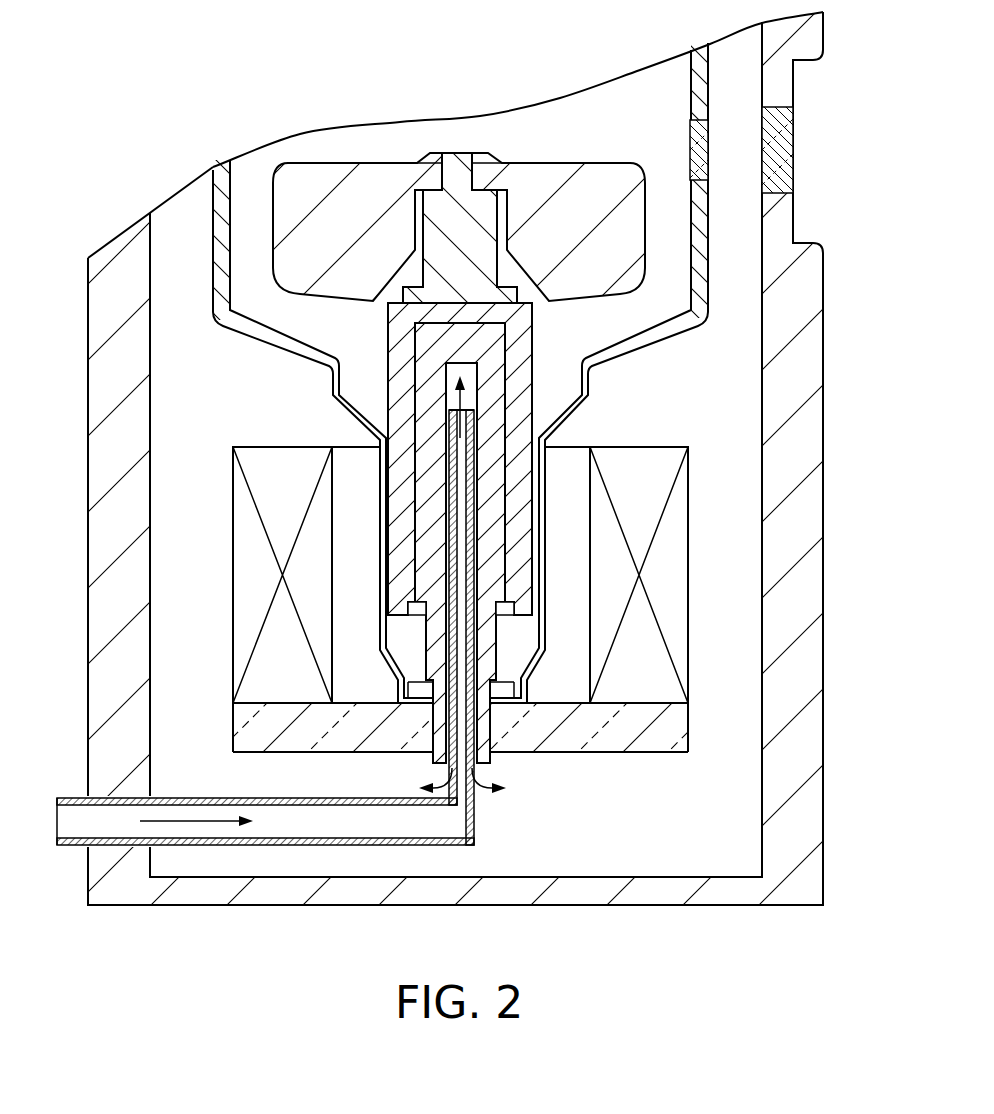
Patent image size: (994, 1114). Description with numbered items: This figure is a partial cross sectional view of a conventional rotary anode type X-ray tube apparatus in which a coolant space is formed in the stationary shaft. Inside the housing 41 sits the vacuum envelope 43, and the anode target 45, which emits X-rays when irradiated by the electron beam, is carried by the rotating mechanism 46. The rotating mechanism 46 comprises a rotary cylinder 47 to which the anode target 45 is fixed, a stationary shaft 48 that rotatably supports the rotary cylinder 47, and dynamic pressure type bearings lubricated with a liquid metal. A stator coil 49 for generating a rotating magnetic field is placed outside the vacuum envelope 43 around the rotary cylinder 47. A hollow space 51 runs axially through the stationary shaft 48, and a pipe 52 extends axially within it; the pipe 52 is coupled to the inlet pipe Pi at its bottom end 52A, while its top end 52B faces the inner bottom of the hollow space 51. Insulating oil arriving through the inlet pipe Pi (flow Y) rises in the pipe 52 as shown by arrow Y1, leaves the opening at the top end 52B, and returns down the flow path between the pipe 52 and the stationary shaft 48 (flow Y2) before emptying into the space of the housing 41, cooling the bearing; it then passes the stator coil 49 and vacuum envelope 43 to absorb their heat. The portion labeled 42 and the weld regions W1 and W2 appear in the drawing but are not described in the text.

The housing 41 is at (820, 287).
The cover 42 is at (568, 124).
The vacuum envelope 43 is at (203, 212).
The anode target 45 is at (372, 182).
The rotating mechanism 46 is at (368, 332).
The rotary cylinder 47 is at (520, 322).
The stationary shaft 48 is at (483, 340).
The stator coil 49 is at (670, 460).
The hollow space 51 is at (470, 375).
The pipe 52 is at (341, 618).
The bottom end 52A is at (477, 823).
The top end 52B is at (447, 401).
The weld W1 is at (704, 143).
The weld W2 is at (790, 128).
The fluid flow Y is at (193, 820).
The arrow Y1 is at (453, 397).
The fluid flow Y2 is at (478, 779).
The inlet pipe Pi is at (73, 848).